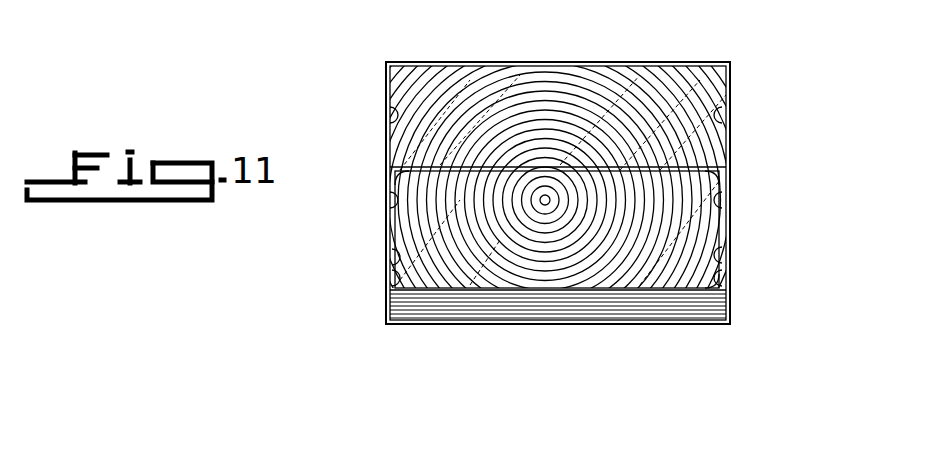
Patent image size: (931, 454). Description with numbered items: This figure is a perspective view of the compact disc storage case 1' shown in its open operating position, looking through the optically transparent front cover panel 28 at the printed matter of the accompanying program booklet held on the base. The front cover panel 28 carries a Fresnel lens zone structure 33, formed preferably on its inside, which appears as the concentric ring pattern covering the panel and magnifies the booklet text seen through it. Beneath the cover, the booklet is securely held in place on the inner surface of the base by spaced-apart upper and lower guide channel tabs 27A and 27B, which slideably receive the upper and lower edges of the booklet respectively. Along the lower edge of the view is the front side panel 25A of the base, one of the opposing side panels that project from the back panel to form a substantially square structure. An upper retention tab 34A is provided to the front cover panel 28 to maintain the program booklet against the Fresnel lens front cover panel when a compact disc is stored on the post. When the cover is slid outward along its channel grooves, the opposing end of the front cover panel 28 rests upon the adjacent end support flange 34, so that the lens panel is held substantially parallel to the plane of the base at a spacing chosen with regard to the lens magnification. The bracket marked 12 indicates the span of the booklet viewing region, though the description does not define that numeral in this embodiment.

The compact disc storage case 1' is at (615, 184).
The front cover panel 28 is at (528, 75).
The Fresnel lens zone structure 33 is at (563, 105).
The middle display panel 12 is at (748, 307).
The front side panel 25A is at (664, 323).
The upper retention tab 34A is at (393, 115).
The end support flange 34 is at (722, 112).
The upper guide channel tab 27A is at (728, 185).
The lower guide channel tab 27B is at (392, 200).